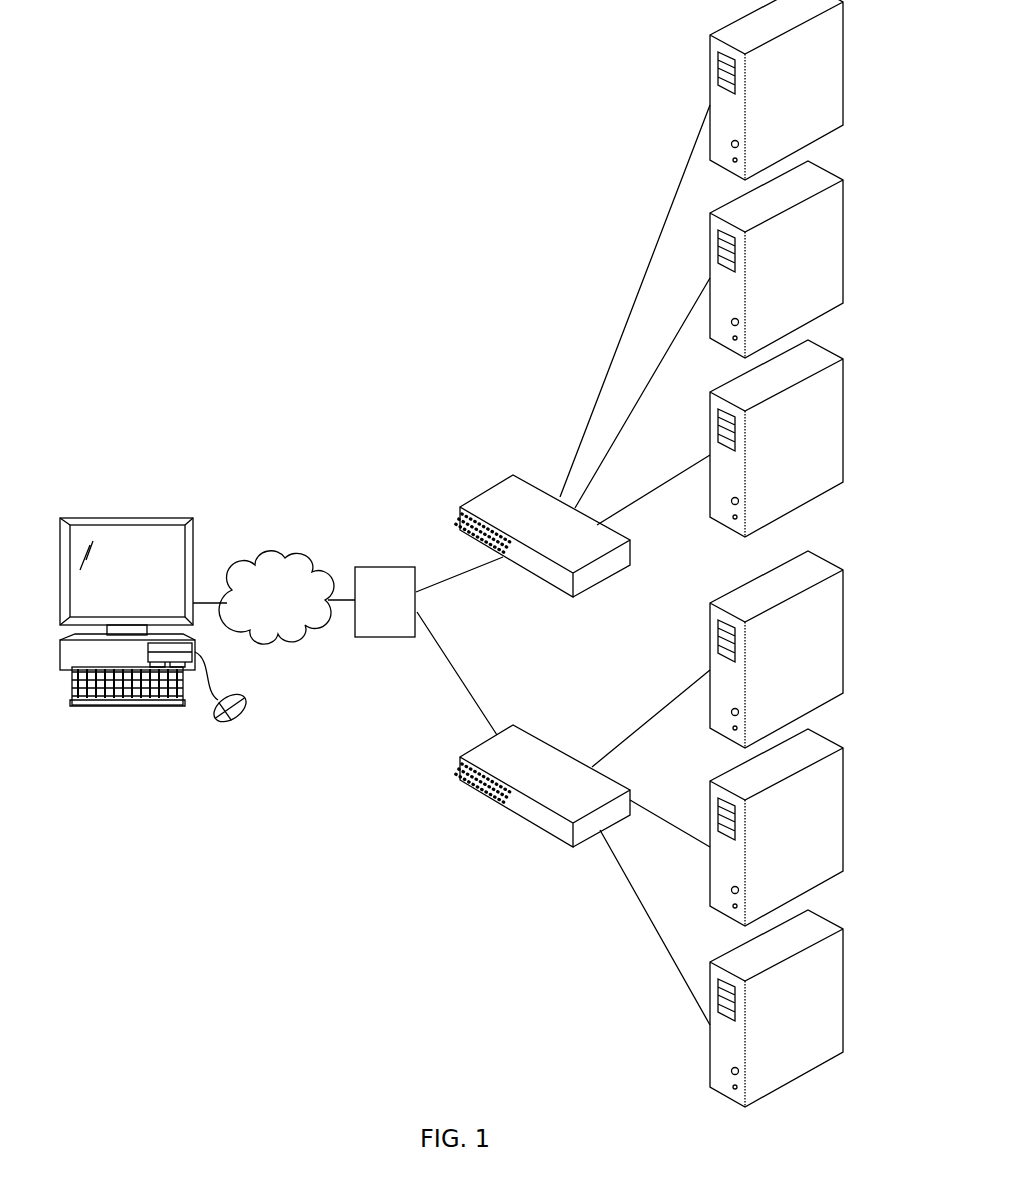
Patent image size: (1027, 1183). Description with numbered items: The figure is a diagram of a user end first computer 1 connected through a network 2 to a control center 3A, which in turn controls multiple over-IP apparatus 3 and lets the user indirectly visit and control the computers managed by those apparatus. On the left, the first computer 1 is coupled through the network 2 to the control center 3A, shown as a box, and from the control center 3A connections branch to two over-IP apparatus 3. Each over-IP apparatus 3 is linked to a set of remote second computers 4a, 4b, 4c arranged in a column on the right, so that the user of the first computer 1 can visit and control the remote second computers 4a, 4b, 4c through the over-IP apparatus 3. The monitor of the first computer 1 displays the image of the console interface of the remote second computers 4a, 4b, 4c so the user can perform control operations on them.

The first computer 1 is at (155, 518).
The network 2 is at (285, 614).
The control center 3A is at (401, 614).
The over-IP apparatus 3 is at (487, 489).
The second computer 4a is at (843, 0).
The second computer 4b is at (795, 543).
The second computer 4c is at (794, 723).